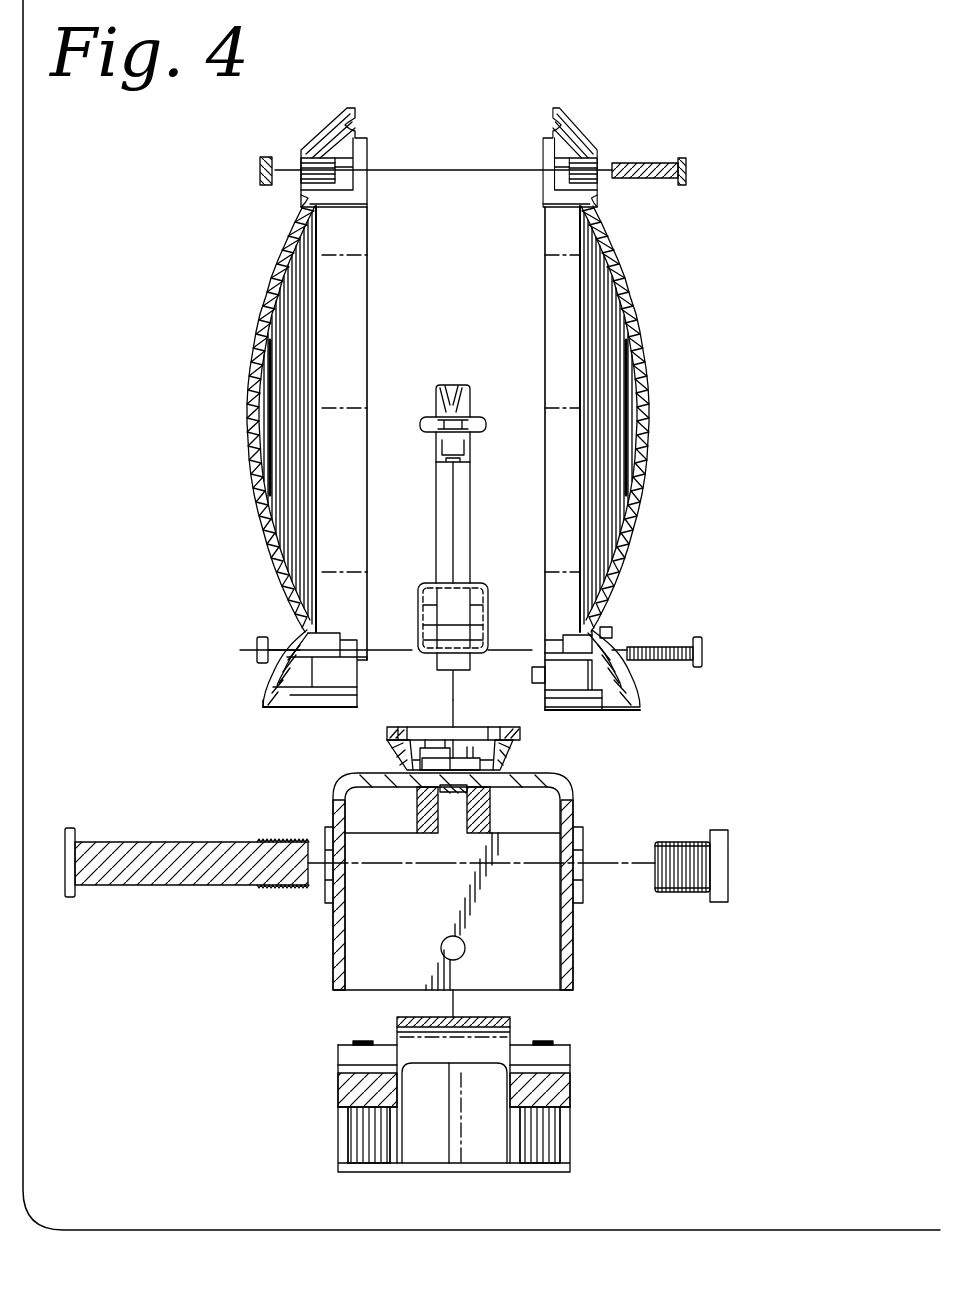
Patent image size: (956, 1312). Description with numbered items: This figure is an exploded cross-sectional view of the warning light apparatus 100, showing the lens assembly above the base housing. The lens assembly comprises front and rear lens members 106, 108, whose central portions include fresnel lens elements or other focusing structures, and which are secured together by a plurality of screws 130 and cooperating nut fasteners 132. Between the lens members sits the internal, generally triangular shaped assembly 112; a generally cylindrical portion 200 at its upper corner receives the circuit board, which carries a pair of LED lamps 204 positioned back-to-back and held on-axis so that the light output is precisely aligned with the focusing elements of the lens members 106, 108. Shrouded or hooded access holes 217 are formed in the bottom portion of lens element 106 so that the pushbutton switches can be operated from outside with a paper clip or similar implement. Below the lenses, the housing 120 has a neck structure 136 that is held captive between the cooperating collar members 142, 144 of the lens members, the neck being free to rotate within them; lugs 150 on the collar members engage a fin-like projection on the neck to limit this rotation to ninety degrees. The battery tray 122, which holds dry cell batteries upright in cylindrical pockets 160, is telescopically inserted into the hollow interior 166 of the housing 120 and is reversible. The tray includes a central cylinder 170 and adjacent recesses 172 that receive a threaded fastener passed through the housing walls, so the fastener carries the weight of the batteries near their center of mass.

The apparatus 100 is at (603, 76).
The front lens member 106 is at (623, 580).
The rear lens member 108 is at (255, 548).
The internal assembly 112 is at (432, 383).
The housing 120 is at (574, 816).
The battery tray 122 is at (568, 1107).
The screw 130 is at (641, 162).
The nut fastener 132 is at (258, 178).
The neck structure 136 is at (520, 742).
The collar member 142 is at (640, 682).
The collar member 144 is at (262, 678).
The lug 150 is at (302, 710).
The cylindrical pocket 160 is at (548, 128).
The hollow interior 166 is at (352, 944).
The central cylinder 170 is at (493, 1017).
The recess 172 is at (345, 1065).
The cylindrical portion 200 is at (453, 385).
The LED lamp 204 is at (478, 418).
The access hole 217 is at (612, 632).